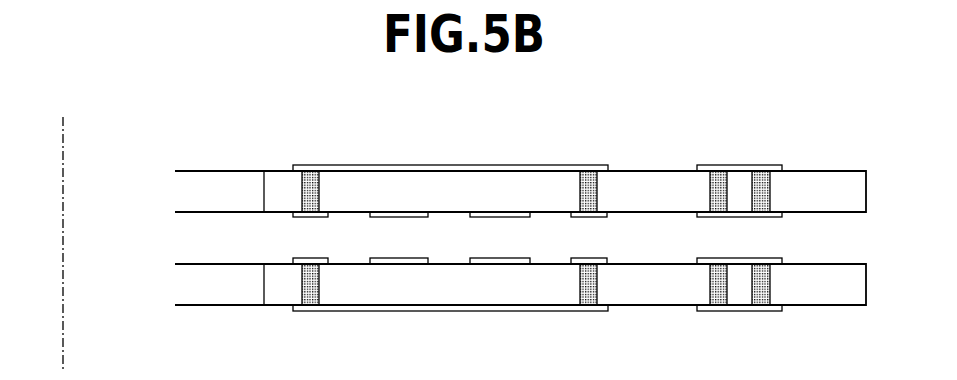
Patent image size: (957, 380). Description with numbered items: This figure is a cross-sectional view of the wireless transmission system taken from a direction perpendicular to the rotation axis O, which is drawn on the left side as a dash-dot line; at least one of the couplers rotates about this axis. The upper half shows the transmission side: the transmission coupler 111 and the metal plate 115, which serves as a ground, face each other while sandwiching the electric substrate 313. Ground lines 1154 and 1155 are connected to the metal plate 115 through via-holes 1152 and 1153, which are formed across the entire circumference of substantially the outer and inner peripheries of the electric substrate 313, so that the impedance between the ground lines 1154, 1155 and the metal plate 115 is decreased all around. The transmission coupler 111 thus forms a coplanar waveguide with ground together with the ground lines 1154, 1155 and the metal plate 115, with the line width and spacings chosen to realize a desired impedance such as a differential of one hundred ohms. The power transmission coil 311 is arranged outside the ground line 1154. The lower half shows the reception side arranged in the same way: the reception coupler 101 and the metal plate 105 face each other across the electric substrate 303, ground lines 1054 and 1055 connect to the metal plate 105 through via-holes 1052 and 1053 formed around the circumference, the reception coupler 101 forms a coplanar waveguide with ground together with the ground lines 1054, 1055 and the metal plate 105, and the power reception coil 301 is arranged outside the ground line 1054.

The rotation axis O is at (63, 147).
The electric substrate 313 is at (222, 171).
The electric substrate 303 is at (222, 305).
The metal plate 115 is at (518, 165).
The metal plate 105 is at (520, 311).
The transmission coupler 111 is at (497, 212).
The reception coupler 101 is at (497, 264).
The via-hole 1153 is at (313, 178).
The via-hole 1053 is at (312, 298).
The ground line 1155 is at (323, 210).
The ground line 1055 is at (323, 266).
The via-hole 1152 is at (590, 178).
The via-hole 1052 is at (590, 298).
The ground line 1154 is at (600, 212).
The ground line 1054 is at (600, 265).
The power transmission coil 311 is at (782, 212).
The power reception coil 301 is at (777, 265).